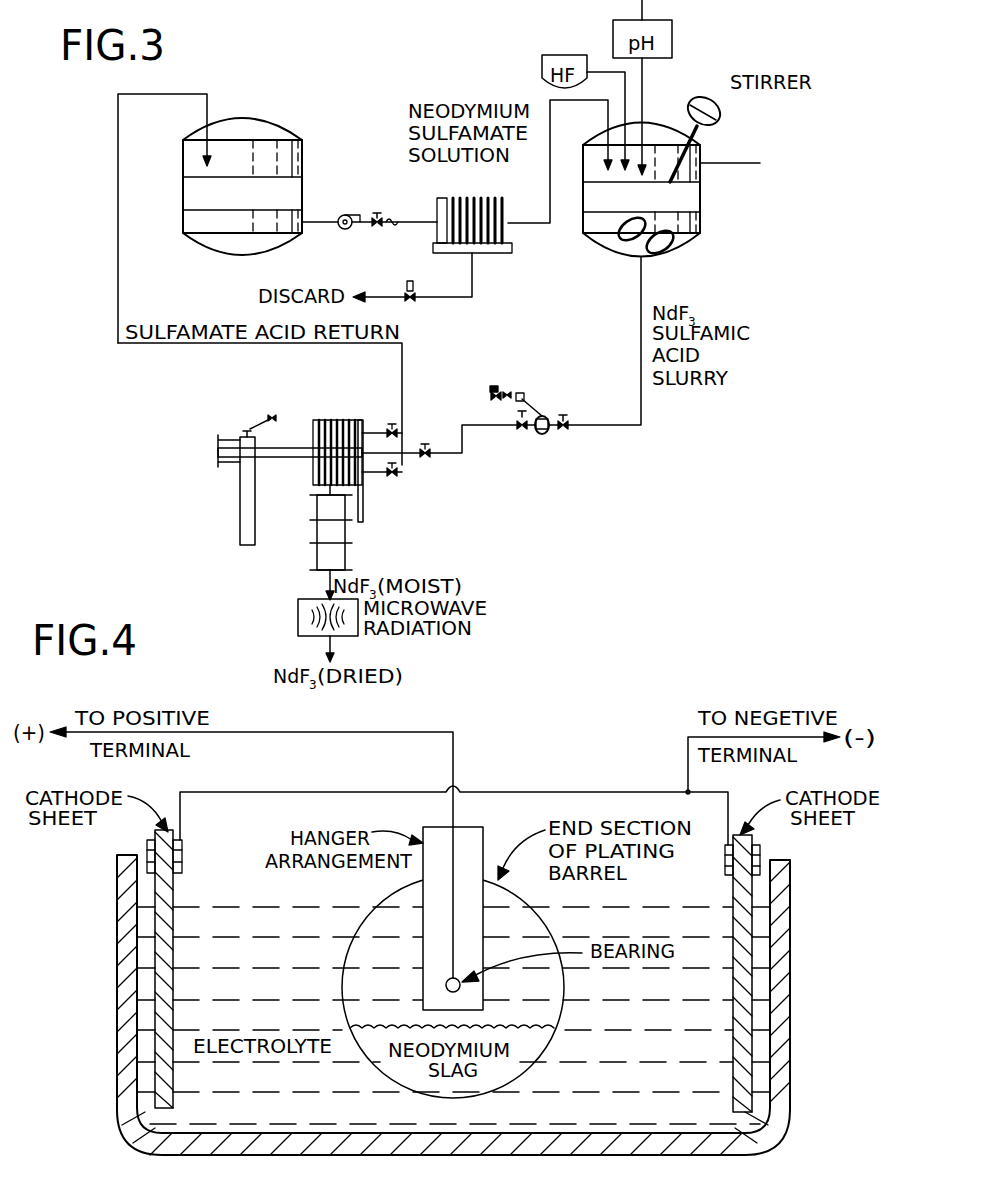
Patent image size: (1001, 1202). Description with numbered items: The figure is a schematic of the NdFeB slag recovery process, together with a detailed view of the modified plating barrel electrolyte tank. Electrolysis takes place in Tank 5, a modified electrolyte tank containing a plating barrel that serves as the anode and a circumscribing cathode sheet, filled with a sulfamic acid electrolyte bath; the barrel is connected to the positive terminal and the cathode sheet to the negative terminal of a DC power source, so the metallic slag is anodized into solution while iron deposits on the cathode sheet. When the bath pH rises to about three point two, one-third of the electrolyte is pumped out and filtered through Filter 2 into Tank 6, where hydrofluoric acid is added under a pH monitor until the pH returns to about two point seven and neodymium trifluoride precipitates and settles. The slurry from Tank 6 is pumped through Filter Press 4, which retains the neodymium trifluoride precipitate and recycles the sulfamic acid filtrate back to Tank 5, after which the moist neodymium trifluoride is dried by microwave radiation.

In FIG. 3, the electrolysis tank 5 is at (242, 186).
In FIG. 4, the electrolysis tank 5 is at (100, 1077).
In FIG. 3, the tank 6 is at (671, 190).
In FIG. 3, the filter 2 is at (522, 191).
In FIG. 3, the filter press 4 is at (324, 456).